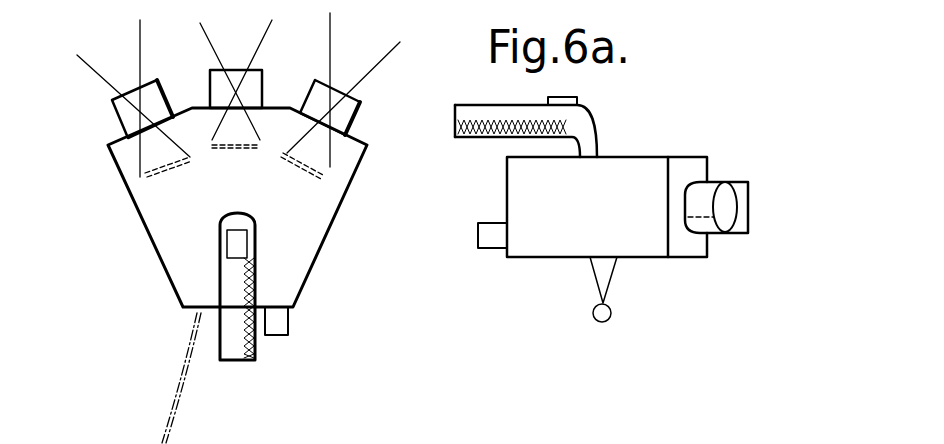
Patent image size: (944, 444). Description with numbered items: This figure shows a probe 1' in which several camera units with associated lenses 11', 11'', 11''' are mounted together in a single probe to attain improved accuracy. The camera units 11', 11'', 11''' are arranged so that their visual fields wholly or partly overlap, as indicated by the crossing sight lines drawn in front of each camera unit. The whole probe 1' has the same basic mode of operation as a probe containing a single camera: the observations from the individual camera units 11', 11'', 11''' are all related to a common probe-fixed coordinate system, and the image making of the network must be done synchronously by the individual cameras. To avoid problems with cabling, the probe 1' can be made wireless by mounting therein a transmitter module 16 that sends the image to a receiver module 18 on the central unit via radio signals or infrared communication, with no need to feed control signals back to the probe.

The probe 1' is at (237, 234).
The camera unit with associated lens 11' is at (112, 105).
The camera unit with associated lens 11'' is at (483, 148).
The camera unit with associated lens 11''' is at (509, 171).
The transmitter module 16 is at (283, 335).
The receiver module 18 is at (177, 420).